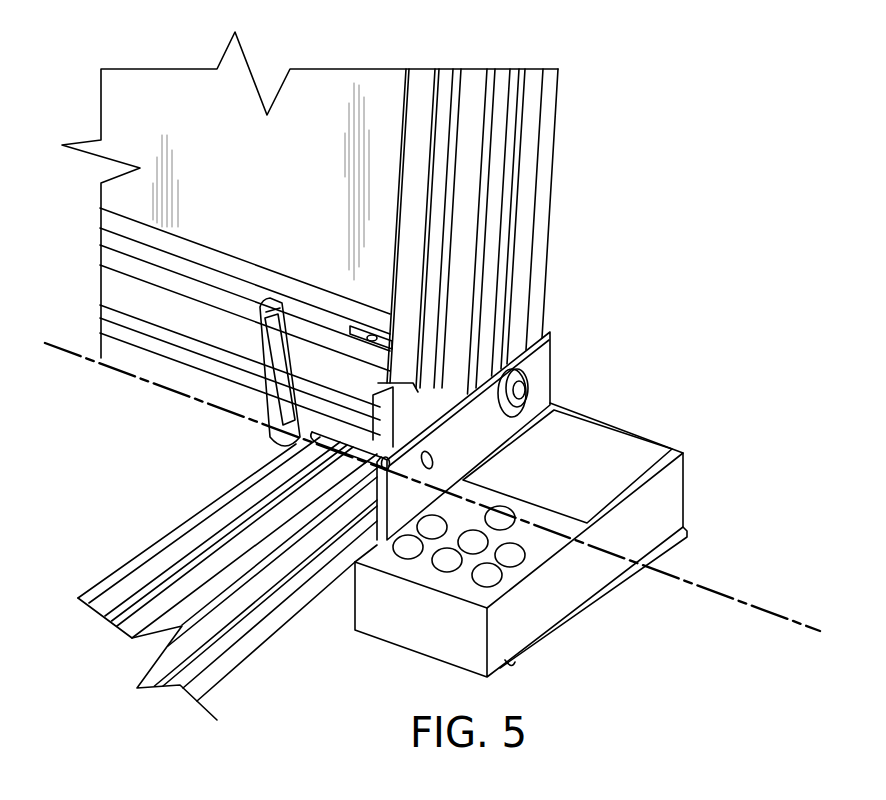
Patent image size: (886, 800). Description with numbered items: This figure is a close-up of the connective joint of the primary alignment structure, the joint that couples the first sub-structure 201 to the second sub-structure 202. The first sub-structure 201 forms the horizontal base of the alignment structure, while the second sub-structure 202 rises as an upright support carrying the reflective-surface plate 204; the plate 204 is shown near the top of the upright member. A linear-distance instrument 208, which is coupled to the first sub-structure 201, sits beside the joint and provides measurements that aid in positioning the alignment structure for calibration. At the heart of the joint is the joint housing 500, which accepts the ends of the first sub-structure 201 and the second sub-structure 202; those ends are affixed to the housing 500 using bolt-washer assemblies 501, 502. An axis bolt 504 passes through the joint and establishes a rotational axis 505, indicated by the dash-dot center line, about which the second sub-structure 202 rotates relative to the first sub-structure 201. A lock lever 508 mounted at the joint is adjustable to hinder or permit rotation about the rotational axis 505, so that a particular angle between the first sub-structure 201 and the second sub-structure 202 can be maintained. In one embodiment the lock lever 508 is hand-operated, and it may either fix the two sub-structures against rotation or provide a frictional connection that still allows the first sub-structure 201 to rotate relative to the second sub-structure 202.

The first sub-structure 201 is at (130, 592).
The second sub-structure 202 is at (545, 168).
The reflective-surface plate 204 is at (110, 123).
The linear-distance instrument 208 is at (603, 440).
The joint housing 500 is at (555, 342).
The bolt-washer assembly 501 is at (393, 432).
The bolt-washer assembly 502 is at (527, 378).
The axis bolt 504 is at (303, 438).
The rotational axis 505 is at (762, 610).
The lock lever 508 is at (262, 342).